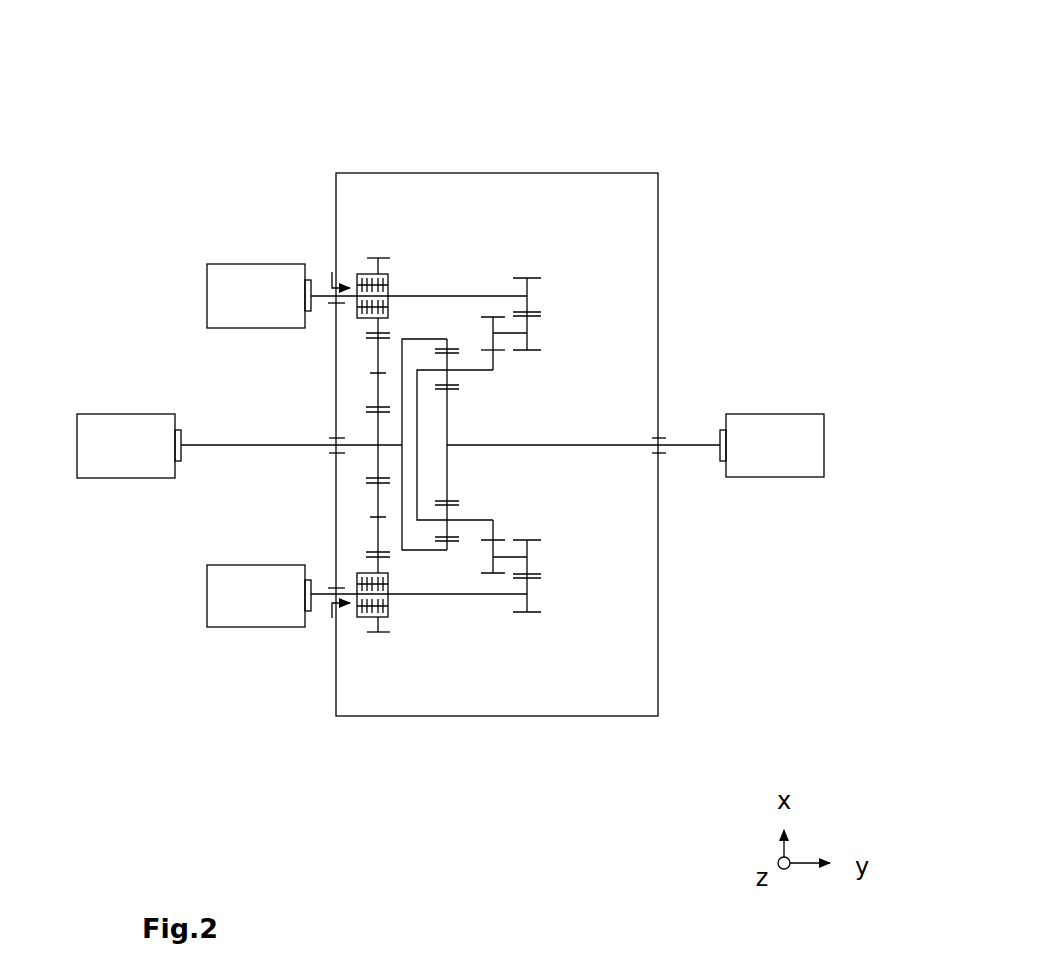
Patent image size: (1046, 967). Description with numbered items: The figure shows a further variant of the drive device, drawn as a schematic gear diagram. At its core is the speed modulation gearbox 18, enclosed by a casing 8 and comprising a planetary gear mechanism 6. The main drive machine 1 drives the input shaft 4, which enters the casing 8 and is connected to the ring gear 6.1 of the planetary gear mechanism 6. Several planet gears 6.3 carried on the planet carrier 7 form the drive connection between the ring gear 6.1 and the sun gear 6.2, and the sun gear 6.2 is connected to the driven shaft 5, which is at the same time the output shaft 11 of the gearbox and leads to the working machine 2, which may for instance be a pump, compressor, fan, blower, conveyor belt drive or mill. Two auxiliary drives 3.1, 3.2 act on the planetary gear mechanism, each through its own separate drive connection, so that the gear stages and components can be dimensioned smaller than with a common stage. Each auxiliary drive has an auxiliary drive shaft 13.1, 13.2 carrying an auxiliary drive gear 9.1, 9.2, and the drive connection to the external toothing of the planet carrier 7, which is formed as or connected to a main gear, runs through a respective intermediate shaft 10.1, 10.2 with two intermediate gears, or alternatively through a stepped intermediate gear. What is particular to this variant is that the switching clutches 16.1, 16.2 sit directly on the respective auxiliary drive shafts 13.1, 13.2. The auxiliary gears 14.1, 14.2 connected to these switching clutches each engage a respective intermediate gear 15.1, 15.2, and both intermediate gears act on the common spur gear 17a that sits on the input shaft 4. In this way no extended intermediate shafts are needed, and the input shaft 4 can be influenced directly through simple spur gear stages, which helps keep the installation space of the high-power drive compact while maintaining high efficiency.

The main drive machine 1 is at (128, 414).
The working machine 2 is at (797, 414).
The auxiliary drive 3.1 is at (247, 264).
The auxiliary drive 3.2 is at (230, 627).
The input shaft 4 is at (200, 443).
The driven shaft 5 is at (490, 448).
The planetary gear mechanism 6 is at (470, 432).
The ring gear 6.1 is at (340, 425).
The sun gear 6.2 is at (447, 468).
The planet gears 6.3 is at (493, 358).
The planet carrier 7 is at (493, 523).
The casing 8 is at (591, 173).
The auxiliary drive gear 9.1 is at (533, 280).
The auxiliary drive gear 9.2 is at (533, 610).
The intermediate shaft 10.1 is at (506, 330).
The intermediate shaft 10.2 is at (502, 597).
The output shaft 11 is at (700, 445).
The auxiliary drive shaft 13.1 is at (430, 296).
The auxiliary drive shaft 13.2 is at (442, 594).
The auxiliary gear 14.1 is at (378, 258).
The auxiliary gear 14.2 is at (378, 632).
The intermediate gear 15.1 is at (336, 376).
The intermediate gear 15.2 is at (336, 532).
The switching clutch 16.1 is at (368, 274).
The switching clutch 16.2 is at (365, 625).
The common spur gear 17a is at (336, 470).
The speed modulation gearbox 18 is at (675, 634).